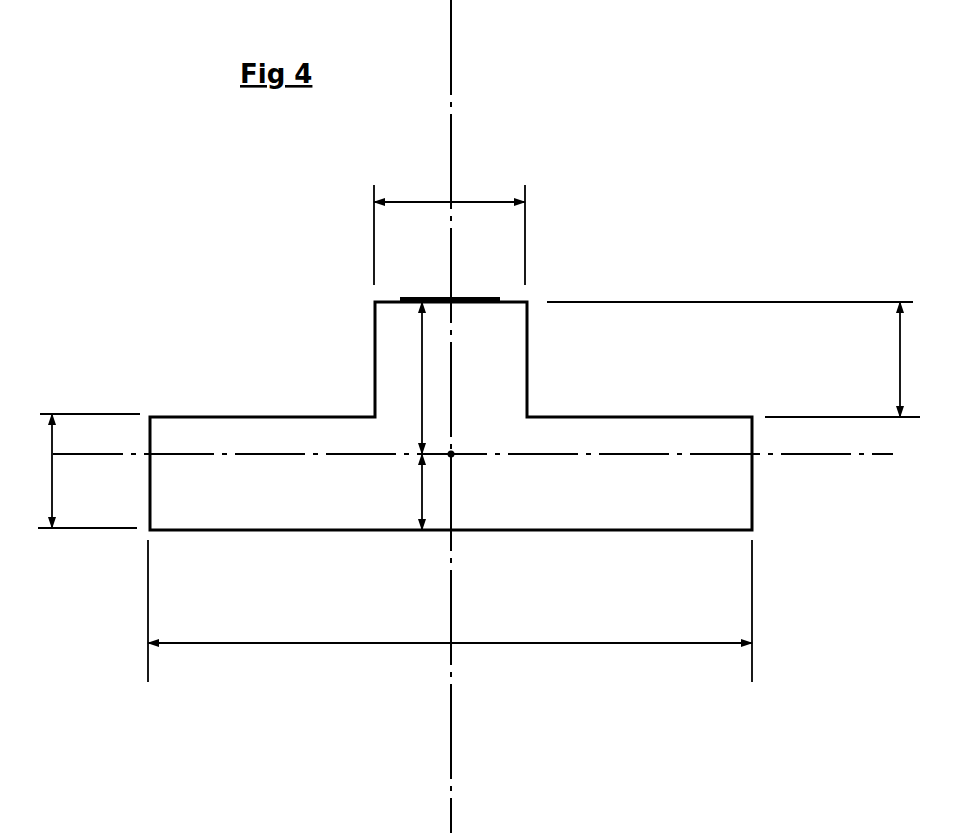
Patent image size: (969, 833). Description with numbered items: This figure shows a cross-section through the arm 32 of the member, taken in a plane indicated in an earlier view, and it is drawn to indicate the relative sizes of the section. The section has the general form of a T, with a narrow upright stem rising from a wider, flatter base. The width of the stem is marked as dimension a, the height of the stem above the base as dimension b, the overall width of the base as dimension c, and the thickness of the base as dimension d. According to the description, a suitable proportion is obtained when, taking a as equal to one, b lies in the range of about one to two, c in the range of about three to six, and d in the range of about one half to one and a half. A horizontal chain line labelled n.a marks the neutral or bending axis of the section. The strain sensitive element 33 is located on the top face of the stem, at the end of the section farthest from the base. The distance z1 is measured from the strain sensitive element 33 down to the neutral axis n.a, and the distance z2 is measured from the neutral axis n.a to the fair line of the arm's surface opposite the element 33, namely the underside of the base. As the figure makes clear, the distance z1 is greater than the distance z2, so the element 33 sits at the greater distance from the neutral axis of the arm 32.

The arm 32 is at (287, 362).
The strain sensitive element 33 is at (422, 298).
The dimension a is at (449, 228).
The dimension b is at (733, 359).
The dimension c is at (450, 611).
The dimension d is at (84, 471).
The distance Z1 z1 is at (409, 378).
The distance Z2 z2 is at (407, 492).
The neutral axis n.a is at (547, 456).